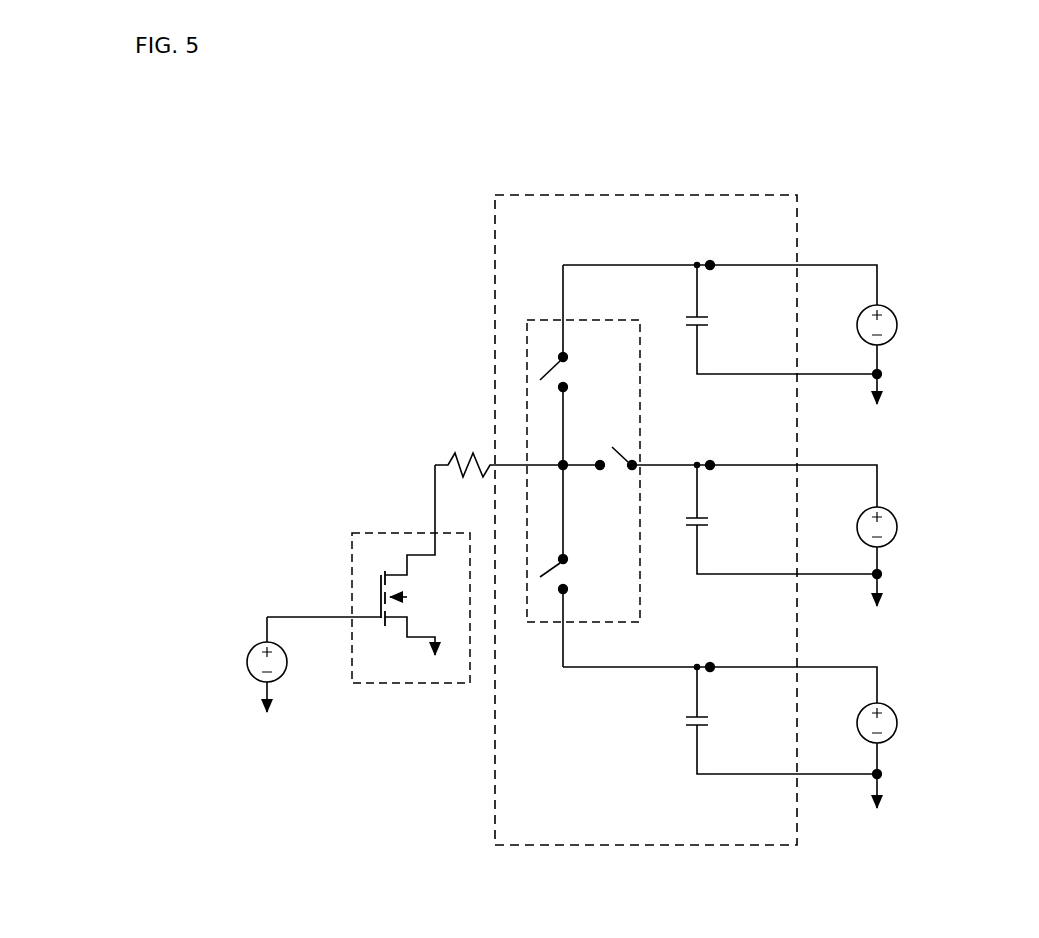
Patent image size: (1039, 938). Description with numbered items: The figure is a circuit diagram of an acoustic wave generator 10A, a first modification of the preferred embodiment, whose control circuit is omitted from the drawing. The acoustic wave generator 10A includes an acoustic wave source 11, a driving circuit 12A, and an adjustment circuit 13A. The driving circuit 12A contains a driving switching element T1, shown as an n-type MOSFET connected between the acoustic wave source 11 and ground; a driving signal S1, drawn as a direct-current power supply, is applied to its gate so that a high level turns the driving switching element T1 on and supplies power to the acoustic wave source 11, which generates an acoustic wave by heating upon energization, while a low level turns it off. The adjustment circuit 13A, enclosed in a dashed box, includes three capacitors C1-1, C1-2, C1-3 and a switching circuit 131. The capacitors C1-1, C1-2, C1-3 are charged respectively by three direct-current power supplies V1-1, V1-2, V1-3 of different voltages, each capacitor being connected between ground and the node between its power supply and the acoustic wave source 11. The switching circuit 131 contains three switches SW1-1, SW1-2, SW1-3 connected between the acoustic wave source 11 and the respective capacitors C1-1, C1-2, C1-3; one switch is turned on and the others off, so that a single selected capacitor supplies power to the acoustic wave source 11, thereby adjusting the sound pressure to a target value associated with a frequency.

The acoustic wave generator 10A is at (258, 155).
The acoustic wave source 11 is at (470, 454).
The driving circuit 12A is at (378, 532).
The driving switching element T1 is at (383, 596).
The driving signal S1 is at (252, 650).
The adjustment circuit 13A is at (560, 194).
The switching circuit 131 is at (612, 318).
The switch SW1-1 is at (553, 372).
The switch SW1-2 is at (632, 460).
The switch SW1-3 is at (552, 563).
The capacitor C1-1 is at (693, 314).
The capacitor C1-2 is at (693, 515).
The capacitor C1-3 is at (693, 714).
The direct-current power supply V1-1 is at (897, 320).
The direct-current power supply V1-2 is at (897, 523).
The direct-current power supply V1-3 is at (897, 723).